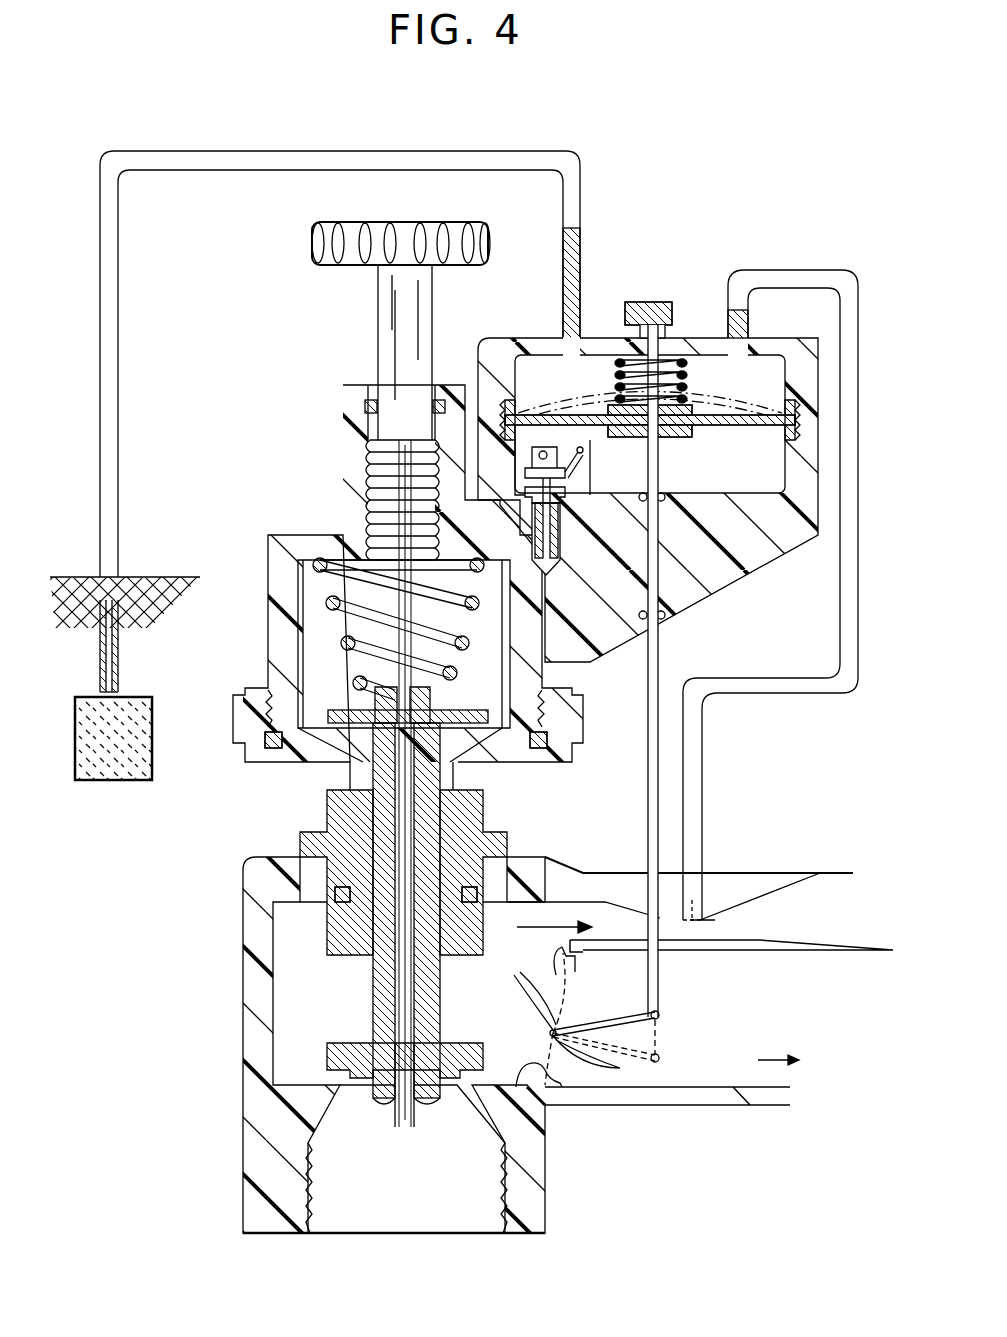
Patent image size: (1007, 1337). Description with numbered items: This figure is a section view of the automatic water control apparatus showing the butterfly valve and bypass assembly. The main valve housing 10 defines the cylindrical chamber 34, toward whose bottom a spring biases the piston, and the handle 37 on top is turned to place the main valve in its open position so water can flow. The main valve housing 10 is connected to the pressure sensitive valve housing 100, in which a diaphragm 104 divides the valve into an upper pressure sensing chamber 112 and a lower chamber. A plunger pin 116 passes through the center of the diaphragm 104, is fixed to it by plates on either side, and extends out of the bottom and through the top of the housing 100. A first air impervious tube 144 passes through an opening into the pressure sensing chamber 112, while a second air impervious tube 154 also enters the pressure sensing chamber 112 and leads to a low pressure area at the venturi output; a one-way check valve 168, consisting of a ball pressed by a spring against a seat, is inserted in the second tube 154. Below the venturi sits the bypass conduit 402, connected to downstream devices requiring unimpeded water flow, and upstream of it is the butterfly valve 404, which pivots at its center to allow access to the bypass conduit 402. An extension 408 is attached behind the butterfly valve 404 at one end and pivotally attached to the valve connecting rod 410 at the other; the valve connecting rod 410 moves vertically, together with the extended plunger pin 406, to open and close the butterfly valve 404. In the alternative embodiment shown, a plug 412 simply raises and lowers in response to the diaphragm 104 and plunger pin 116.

The main valve housing 10 is at (298, 532).
The cylindrical chamber 34 is at (338, 677).
The handle 37 is at (330, 266).
The pressure sensitive valve housing 100 is at (680, 302).
The diaphragm 104 is at (744, 425).
The upper pressure sensing chamber 112 is at (558, 386).
The plunger pin 116 is at (662, 440).
The first air impervious tube 144 is at (810, 270).
The second air impervious tube 154 is at (240, 132).
The one-way check valve 168 is at (113, 736).
The bypass conduit 402 is at (804, 1061).
The butterfly valve 404 is at (606, 1088).
The extended plunger pin 406 is at (668, 1014).
The extension 408 is at (603, 1018).
The valve connecting rod 410 is at (661, 1058).
The plug 412 is at (628, 637).